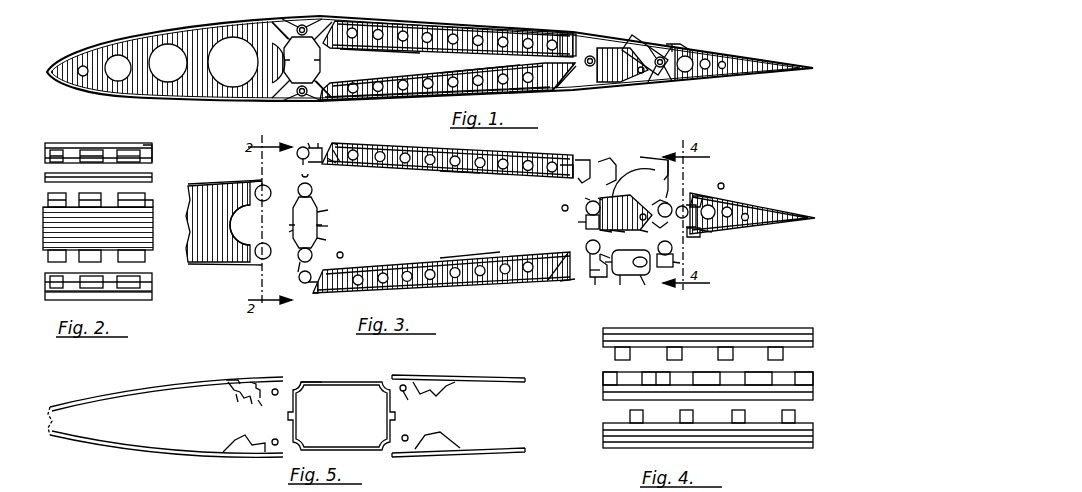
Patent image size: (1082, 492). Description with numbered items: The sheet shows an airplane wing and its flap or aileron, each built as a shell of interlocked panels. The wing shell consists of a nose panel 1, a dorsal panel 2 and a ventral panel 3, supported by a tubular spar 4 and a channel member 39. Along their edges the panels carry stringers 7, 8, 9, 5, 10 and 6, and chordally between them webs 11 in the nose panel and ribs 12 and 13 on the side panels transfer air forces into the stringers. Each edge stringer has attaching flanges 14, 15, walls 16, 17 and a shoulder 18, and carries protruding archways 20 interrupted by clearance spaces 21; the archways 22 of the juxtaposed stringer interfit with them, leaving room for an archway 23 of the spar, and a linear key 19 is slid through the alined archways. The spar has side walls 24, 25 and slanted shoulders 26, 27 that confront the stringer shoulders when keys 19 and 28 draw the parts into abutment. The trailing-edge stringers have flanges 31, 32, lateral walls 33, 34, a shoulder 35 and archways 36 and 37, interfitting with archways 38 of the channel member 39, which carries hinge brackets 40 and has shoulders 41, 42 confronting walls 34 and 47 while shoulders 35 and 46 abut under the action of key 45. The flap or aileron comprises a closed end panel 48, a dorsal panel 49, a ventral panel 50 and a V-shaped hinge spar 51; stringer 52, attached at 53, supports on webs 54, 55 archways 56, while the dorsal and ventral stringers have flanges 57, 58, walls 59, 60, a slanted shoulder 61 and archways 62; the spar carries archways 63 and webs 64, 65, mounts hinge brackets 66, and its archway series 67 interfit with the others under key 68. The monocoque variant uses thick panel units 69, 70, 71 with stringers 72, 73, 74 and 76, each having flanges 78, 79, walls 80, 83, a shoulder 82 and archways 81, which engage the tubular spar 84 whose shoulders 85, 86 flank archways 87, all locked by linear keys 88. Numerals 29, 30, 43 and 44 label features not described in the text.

In FIG. 1, the nose panel 1 is at (95, 48).
In FIG. 3, the nose panel 1 is at (218, 263).
In FIG. 1, the dorsal panel 2 is at (443, 22).
In FIG. 2, the dorsal panel 2 is at (45, 144).
In FIG. 3, the dorsal panel 2 is at (538, 152).
In FIG. 1, the ventral panel 3 is at (418, 98).
In FIG. 2, the ventral panel 3 is at (152, 294).
In FIG. 3, the ventral panel 3 is at (484, 288).
In FIG. 1, the tubular spar 4 is at (321, 52).
In FIG. 2, the tubular spar 4 is at (152, 228).
In FIG. 3, the tubular spar 4 is at (293, 215).
In FIG. 1, the stringer 5 is at (577, 36).
In FIG. 3, the stringer 5 is at (583, 160).
In FIG. 1, the stringer 6 is at (568, 88).
In FIG. 3, the stringer 6 is at (590, 260).
In FIG. 1, the stringer 7 is at (291, 20).
In FIG. 3, the stringer 7 is at (250, 182).
In FIG. 1, the stringer 8 is at (292, 100).
In FIG. 3, the stringer 8 is at (262, 259).
In FIG. 1, the stringer 9 is at (312, 22).
In FIG. 2, the stringer 9 is at (151, 145).
In FIG. 3, the stringer 9 is at (310, 176).
In FIG. 1, the stringer 10 is at (313, 100).
In FIG. 2, the stringer 10 is at (152, 276).
In FIG. 3, the stringer 10 is at (304, 284).
In FIG. 1, the webs 11 is at (208, 64).
In FIG. 3, the webs 11 is at (226, 220).
In FIG. 1, the ribs 12 is at (392, 51).
In FIG. 3, the ribs 12 is at (468, 176).
In FIG. 1, the ribs 13 is at (466, 70).
In FIG. 3, the ribs 13 is at (470, 262).
In FIG. 3, the attaching flange 14 is at (318, 144).
In FIG. 3, the attaching flange 15 is at (334, 144).
In FIG. 3, the wall 16 is at (308, 144).
In FIG. 3, the wall 17 is at (342, 163).
In FIG. 3, the shoulder 18 is at (301, 162).
In FIG. 2, the linear key 19 is at (152, 175).
In FIG. 3, the linear key 19 is at (330, 165).
In FIG. 2, the archways 20 is at (118, 149).
In FIG. 3, the archways 20 is at (297, 153).
In FIG. 2, the clearance spaces 21 is at (100, 149).
In FIG. 2, the archways 22 is at (145, 196).
In FIG. 3, the archways 22 is at (271, 193).
In FIG. 2, the archways 23 is at (150, 204).
In FIG. 3, the archways 23 is at (312, 193).
In FIG. 3, the side wall 24 is at (293, 234).
In FIG. 3, the side wall 25 is at (326, 240).
In FIG. 3, the shoulder 26 is at (298, 264).
In FIG. 3, the shoulder 27 is at (312, 256).
In FIG. 3, the key 28 is at (344, 254).
In FIG. 3, the tab 29 is at (328, 210).
In FIG. 3, the tab 30 is at (328, 226).
In FIG. 3, the attaching flange 31 is at (550, 282).
In FIG. 3, the attaching flange 32 is at (602, 278).
In FIG. 3, the lateral wall 33 is at (568, 282).
In FIG. 3, the lateral wall 34 is at (595, 286).
In FIG. 3, the shoulder 35 is at (586, 246).
In FIG. 3, the archways 36 is at (615, 252).
In FIG. 3, the archways 37 is at (586, 196).
In FIG. 3, the archways 38 is at (586, 211).
In FIG. 1, the channel member 39 is at (630, 43).
In FIG. 3, the channel member 39 is at (600, 230).
In FIG. 1, the hinge brackets 40 is at (612, 82).
In FIG. 3, the hinge brackets 40 is at (620, 198).
In FIG. 3, the shoulder 41 is at (578, 222).
In FIG. 3, the shoulder 42 is at (600, 197).
In FIG. 3, the curved member 43 is at (615, 190).
In FIG. 3, the edge 44 is at (614, 231).
In FIG. 3, the linear key 45 is at (562, 208).
In FIG. 3, the shoulder 46 is at (572, 180).
In FIG. 3, the stringer wall 47 is at (604, 160).
In FIG. 1, the panel 48 is at (722, 77).
In FIG. 3, the panel 48 is at (768, 208).
In FIG. 1, the dorsal panel 49 is at (657, 46).
In FIG. 3, the dorsal panel 49 is at (643, 157).
In FIG. 4, the dorsal panel 49 is at (806, 332).
In FIG. 1, the ventral panel 50 is at (636, 82).
In FIG. 3, the ventral panel 50 is at (612, 276).
In FIG. 4, the ventral panel 50 is at (810, 446).
In FIG. 3, the hinge spar 51 is at (664, 205).
In FIG. 4, the hinge spar 51 is at (603, 393).
In FIG. 3, the stringer 52 is at (696, 196).
In FIG. 3, the attachment 53 is at (695, 237).
In FIG. 3, the web 54 is at (706, 232).
In FIG. 3, the web 55 is at (705, 196).
In FIG. 3, the archways 56 is at (680, 218).
In FIG. 4, the archways 56 is at (652, 372).
In FIG. 3, the flange 57 is at (622, 276).
In FIG. 3, the flange 58 is at (648, 276).
In FIG. 3, the lateral wall 59 is at (680, 263).
In FIG. 3, the lateral wall 60 is at (650, 262).
In FIG. 3, the slanted shoulder 61 is at (673, 257).
In FIG. 3, the archways 62 is at (614, 258).
In FIG. 4, the archways 62 is at (630, 416).
In FIG. 4, the archways 63 is at (603, 377).
In FIG. 3, the web 64 is at (650, 202).
In FIG. 3, the web 65 is at (656, 230).
In FIG. 3, the hinge brackets 66 is at (642, 230).
In FIG. 3, the archway series 67 is at (668, 160).
In FIG. 4, the archway series 67 is at (615, 354).
In FIG. 3, the key 68 is at (725, 186).
In FIG. 5, the panel unit 69 is at (94, 438).
In FIG. 5, the panel unit 70 is at (510, 377).
In FIG. 5, the panel unit 71 is at (488, 454).
In FIG. 5, the stringer 72 is at (239, 380).
In FIG. 5, the stringer 73 is at (238, 454).
In FIG. 5, the stringer 74 is at (448, 388).
In FIG. 5, the stringer 76 is at (452, 440).
In FIG. 5, the flange 78 is at (262, 392).
In FIG. 5, the flange 79 is at (228, 385).
In FIG. 5, the lateral wall 80 is at (243, 398).
In FIG. 5, the archways 81 is at (252, 405).
In FIG. 5, the shoulder 82 is at (236, 404).
In FIG. 5, the lateral wall 83 is at (260, 408).
In FIG. 5, the spar 84 is at (352, 382).
In FIG. 5, the shoulder 85 is at (292, 388).
In FIG. 5, the shoulder 86 is at (316, 381).
In FIG. 5, the archways 87 is at (303, 381).
In FIG. 5, the linear keys 88 is at (409, 401).